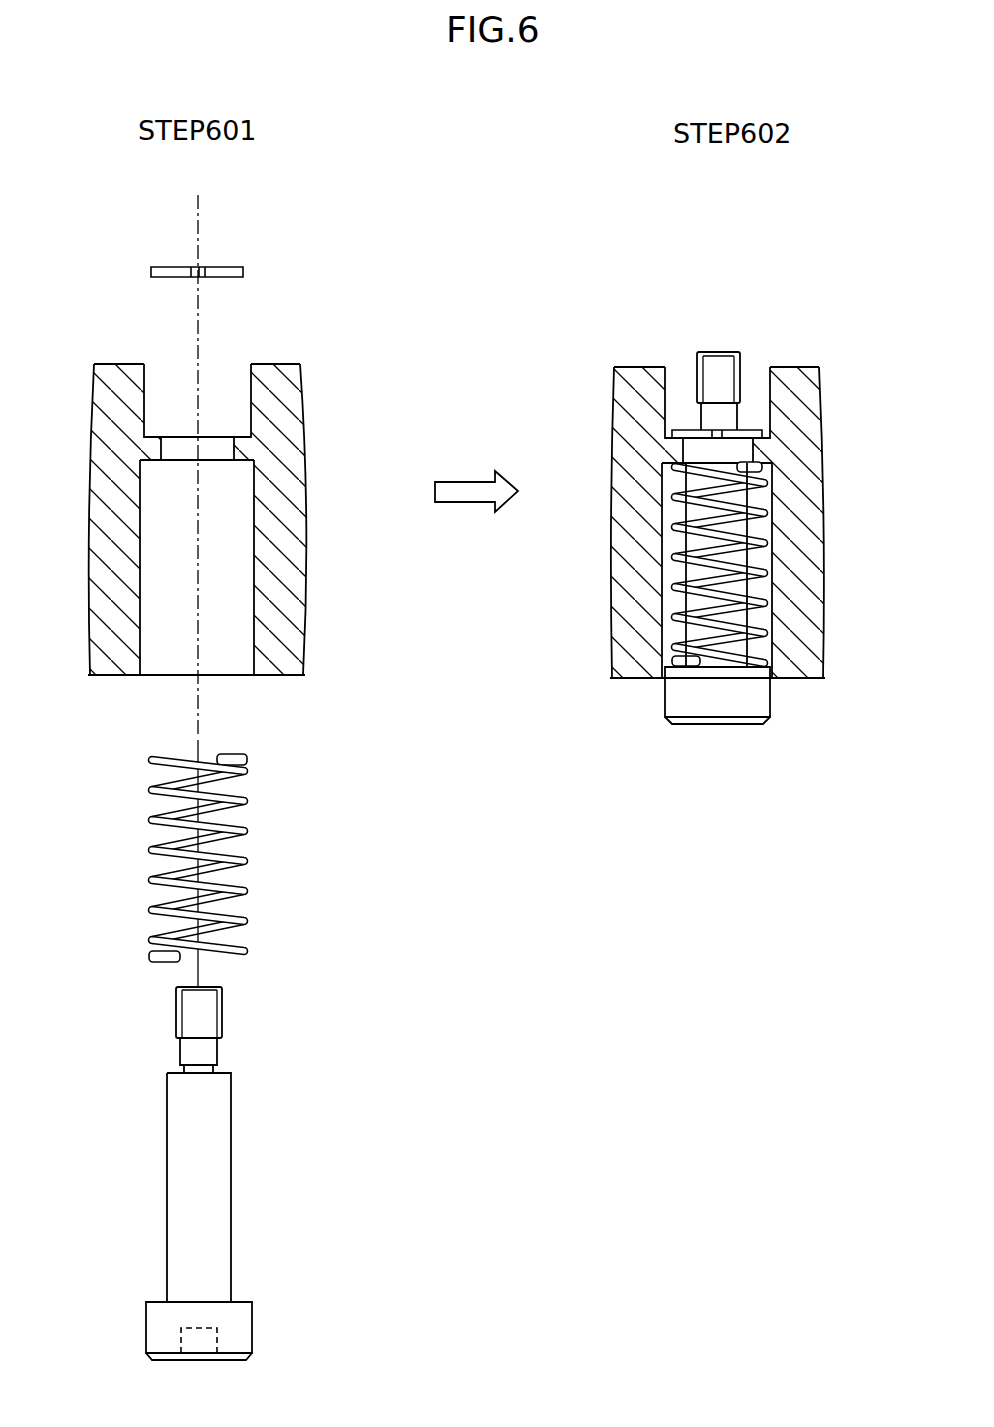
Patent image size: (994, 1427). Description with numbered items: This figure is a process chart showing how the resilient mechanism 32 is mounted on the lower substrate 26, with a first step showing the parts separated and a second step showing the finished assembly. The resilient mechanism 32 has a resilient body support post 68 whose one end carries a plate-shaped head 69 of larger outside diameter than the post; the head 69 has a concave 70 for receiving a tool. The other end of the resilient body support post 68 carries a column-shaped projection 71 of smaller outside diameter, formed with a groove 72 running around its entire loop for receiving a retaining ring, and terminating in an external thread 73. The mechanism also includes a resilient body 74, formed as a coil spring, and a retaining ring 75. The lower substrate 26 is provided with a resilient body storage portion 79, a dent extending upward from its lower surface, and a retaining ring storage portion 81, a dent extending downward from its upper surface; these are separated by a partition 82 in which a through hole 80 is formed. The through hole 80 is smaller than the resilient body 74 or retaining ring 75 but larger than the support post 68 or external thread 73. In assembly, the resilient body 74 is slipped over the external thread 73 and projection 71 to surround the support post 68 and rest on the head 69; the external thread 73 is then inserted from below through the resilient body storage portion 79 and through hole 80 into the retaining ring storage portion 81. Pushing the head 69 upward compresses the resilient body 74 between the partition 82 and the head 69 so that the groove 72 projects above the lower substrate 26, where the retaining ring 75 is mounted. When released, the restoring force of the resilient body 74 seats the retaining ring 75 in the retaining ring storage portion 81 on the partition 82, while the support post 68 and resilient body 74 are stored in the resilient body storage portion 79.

The lower substrate 26 is at (292, 597).
The resilient mechanism 32 is at (469, 829).
The resilient body support post 68 is at (222, 1148).
The head 69 is at (243, 1327).
The concave 70 is at (182, 1340).
The projection 71 is at (213, 1048).
The groove 72 is at (215, 1067).
The external thread 73 is at (177, 1013).
The resilient body 74 is at (243, 835).
The retaining ring 75 is at (237, 271).
The resilient body storage portion 79 is at (224, 668).
The through hole 80 is at (218, 455).
The retaining ring storage portion 81 is at (225, 372).
The partition 82 is at (248, 447).